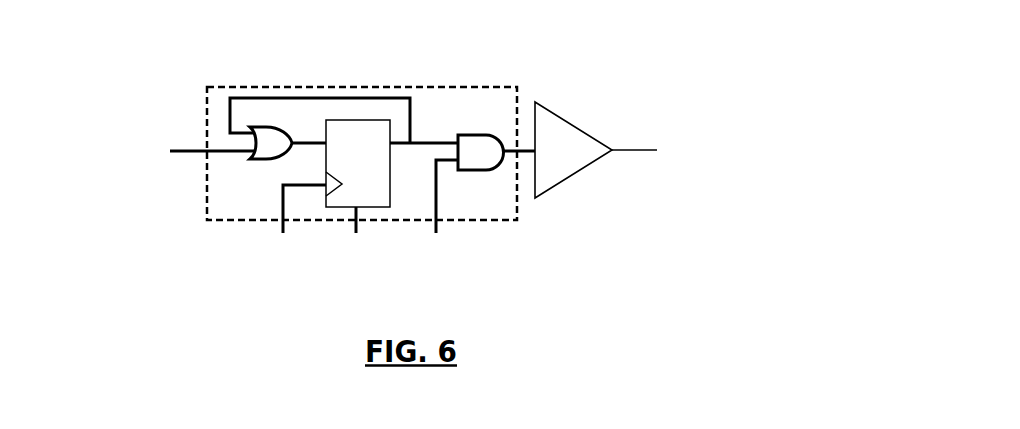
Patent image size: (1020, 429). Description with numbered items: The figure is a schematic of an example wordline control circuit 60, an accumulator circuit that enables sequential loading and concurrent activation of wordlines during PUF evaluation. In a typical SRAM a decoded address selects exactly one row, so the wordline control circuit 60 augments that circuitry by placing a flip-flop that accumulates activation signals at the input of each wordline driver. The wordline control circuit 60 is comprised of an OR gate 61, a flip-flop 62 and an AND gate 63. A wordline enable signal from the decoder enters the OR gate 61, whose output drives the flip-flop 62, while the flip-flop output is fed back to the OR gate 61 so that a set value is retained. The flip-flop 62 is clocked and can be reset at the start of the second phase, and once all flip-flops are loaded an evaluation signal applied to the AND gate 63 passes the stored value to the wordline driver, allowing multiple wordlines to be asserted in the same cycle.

The wordline control circuit 60 is at (684, 83).
The OR gate 61 is at (265, 159).
The flip-flop 62 is at (390, 187).
The AND gate 63 is at (484, 134).